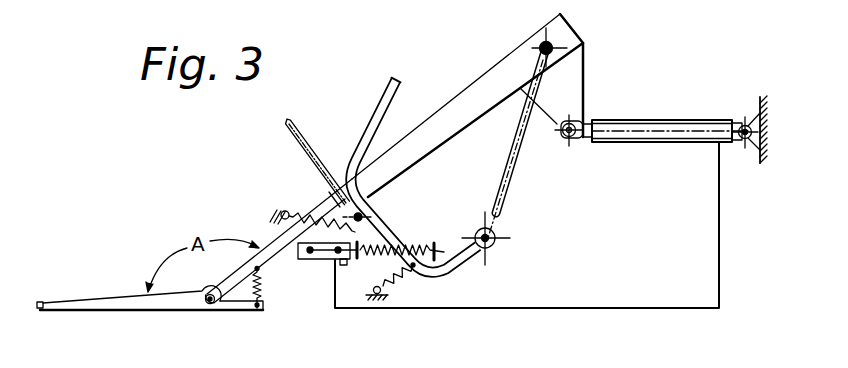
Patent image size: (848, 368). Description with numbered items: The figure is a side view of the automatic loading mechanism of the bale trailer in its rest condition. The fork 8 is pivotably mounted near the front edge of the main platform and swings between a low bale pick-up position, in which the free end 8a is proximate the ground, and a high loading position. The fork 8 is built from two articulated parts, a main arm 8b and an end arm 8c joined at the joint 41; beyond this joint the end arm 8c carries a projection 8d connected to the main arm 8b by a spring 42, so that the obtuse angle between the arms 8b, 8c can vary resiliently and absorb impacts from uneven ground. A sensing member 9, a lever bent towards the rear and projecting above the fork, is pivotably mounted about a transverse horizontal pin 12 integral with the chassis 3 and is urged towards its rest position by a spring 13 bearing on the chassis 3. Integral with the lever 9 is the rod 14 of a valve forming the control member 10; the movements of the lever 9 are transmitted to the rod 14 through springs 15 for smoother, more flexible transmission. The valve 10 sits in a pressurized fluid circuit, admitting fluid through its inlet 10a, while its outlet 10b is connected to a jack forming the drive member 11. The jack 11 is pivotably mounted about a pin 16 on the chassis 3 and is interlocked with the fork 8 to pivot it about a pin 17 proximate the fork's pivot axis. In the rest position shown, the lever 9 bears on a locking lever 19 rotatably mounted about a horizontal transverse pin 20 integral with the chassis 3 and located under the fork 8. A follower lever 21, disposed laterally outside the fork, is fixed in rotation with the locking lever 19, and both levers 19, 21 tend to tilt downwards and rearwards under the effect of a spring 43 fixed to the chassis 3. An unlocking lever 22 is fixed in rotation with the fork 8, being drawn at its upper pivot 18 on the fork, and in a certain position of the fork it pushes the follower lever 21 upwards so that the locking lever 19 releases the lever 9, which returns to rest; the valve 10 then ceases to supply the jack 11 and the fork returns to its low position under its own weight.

The chassis 3 is at (758, 101).
The fork 8 is at (387, 143).
The free end of fork 8a is at (40, 310).
The main arm 8b is at (452, 107).
The end arm 8c is at (110, 302).
The projection 8d is at (232, 309).
The sensing member 9 is at (381, 98).
The control member 10 is at (281, 235).
The inlet 10a is at (314, 261).
The outlet 10b is at (330, 262).
The drive member 11 is at (667, 143).
The transverse horizontal pin 12 is at (497, 232).
The spring 13 is at (404, 277).
The rod 14 is at (434, 236).
The springs 15 is at (421, 246).
The pin 16 is at (744, 142).
The pin 17 is at (577, 138).
The pin 18 is at (541, 43).
The locking lever 19 is at (336, 203).
The horizontal transverse pin 20 is at (368, 203).
The follower lever 21 is at (315, 153).
The unlocking lever 22 is at (514, 161).
The joint 41 is at (207, 295).
The spring 42 is at (266, 304).
The spring 43 is at (284, 210).